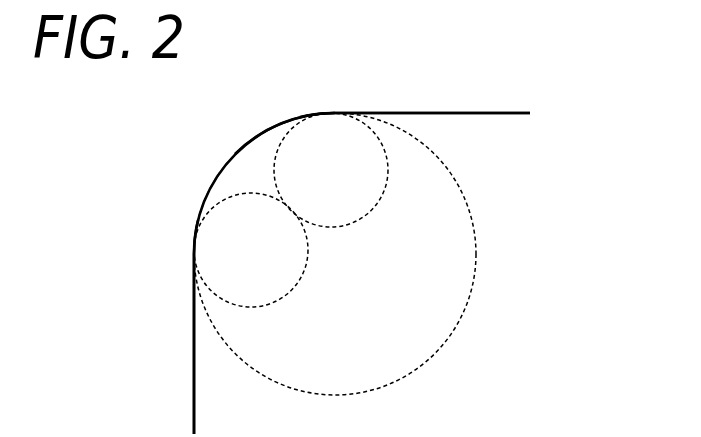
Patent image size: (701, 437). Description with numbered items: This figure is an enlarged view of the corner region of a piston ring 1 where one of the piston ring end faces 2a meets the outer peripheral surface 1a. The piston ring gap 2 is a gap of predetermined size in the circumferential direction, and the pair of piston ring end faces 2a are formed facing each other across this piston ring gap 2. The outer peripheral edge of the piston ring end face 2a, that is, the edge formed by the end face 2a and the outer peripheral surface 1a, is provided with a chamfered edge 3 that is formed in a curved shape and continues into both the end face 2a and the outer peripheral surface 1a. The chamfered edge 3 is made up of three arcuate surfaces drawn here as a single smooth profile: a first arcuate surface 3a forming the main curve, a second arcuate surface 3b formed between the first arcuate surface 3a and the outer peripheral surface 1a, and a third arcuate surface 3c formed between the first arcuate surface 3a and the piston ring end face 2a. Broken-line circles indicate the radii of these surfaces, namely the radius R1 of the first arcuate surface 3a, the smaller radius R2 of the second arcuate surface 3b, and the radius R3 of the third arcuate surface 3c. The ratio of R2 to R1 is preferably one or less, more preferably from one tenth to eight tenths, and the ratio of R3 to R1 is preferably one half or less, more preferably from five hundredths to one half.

The piston ring 1 is at (481, 90).
The outer peripheral surface 1a is at (433, 112).
The piston ring gap 2 is at (153, 315).
The piston ring end face 2a is at (193, 357).
The chamfered edge 3 is at (201, 152).
The first arcuate surface 3a is at (252, 139).
The second arcuate surface 3b is at (330, 112).
The third arcuate surface 3c is at (193, 249).
The radius of the first arcuate surface R1 is at (239, 158).
The radius of the second arcuate surface R2 is at (294, 133).
The radius of the third arcuate surface R3 is at (214, 213).